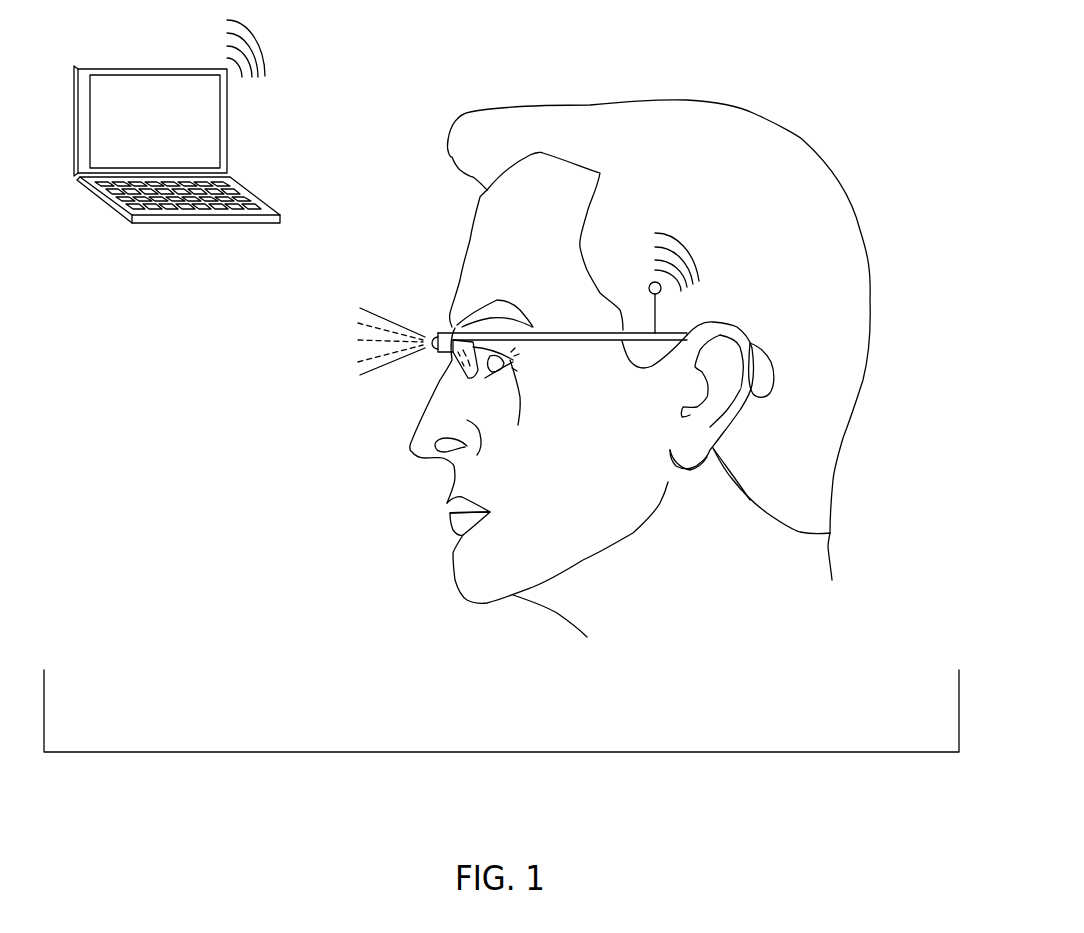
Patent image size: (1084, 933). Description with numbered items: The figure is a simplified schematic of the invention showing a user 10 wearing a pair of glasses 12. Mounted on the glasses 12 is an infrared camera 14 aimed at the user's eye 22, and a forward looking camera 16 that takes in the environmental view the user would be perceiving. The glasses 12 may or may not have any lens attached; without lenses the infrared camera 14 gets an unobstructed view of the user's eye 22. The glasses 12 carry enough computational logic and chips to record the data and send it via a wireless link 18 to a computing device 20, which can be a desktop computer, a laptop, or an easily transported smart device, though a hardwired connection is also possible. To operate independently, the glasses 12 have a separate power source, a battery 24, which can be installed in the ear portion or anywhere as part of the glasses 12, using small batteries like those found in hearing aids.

The user 10 is at (748, 224).
The pair of glasses 12 is at (547, 333).
The infrared camera 14 is at (462, 353).
The forward looking camera 16 is at (434, 347).
The wireless link 18 is at (657, 321).
The computing device 20 is at (150, 66).
The user's eye 22 is at (512, 378).
The battery 24 is at (776, 374).